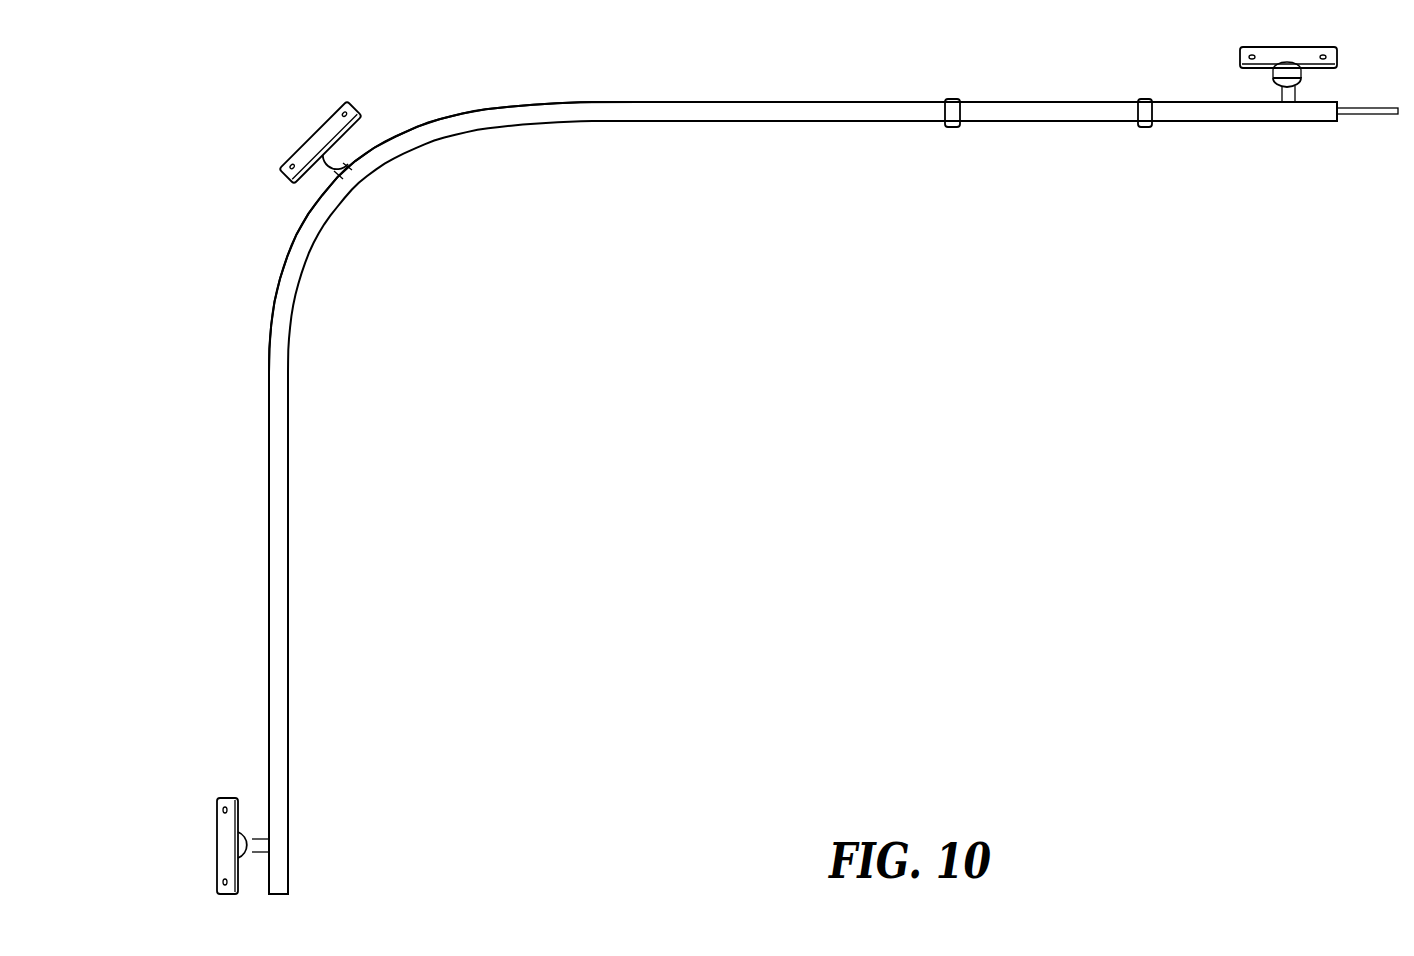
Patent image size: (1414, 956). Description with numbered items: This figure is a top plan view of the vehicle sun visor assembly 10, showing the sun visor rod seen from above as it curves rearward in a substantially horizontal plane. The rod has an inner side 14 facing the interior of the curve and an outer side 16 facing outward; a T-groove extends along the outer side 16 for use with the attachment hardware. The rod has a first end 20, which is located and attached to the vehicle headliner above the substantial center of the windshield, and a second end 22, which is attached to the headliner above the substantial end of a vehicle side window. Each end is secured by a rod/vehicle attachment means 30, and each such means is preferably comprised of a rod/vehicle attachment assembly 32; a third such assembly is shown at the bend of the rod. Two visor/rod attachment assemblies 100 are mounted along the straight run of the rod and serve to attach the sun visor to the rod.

The vehicle sun visor assembly 10 is at (1183, 291).
The inner side 14 is at (290, 494).
The outer side 16 is at (268, 496).
The first end 20 is at (1330, 112).
The second end 22 is at (280, 876).
The rod/vehicle attachment means 30 is at (333, 112).
The rod/vehicle attachment assembly 32 is at (227, 846).
The visor/rod attachment assembly 100 is at (950, 102).